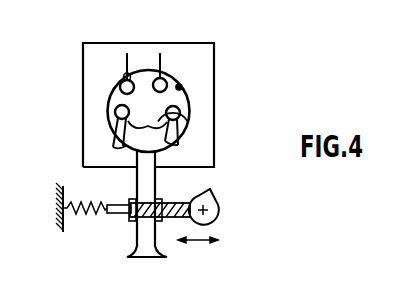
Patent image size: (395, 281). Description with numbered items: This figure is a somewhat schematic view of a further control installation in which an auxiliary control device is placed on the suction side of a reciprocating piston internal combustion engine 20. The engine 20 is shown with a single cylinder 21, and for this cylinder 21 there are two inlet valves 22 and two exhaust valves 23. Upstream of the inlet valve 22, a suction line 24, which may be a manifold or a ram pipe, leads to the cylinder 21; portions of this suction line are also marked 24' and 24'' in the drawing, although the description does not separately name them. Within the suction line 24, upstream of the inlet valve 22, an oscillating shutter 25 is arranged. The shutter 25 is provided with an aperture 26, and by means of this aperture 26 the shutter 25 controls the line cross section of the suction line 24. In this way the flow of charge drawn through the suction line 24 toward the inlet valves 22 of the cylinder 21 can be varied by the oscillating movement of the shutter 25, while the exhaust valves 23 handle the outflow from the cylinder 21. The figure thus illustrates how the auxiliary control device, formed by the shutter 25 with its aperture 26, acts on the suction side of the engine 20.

The reciprocating piston internal combustion engine 20 is at (83, 63).
The cylinder 21 is at (182, 87).
The inlet valve 22 is at (114, 147).
The exhaust valve 23 is at (131, 63).
The suction line 24 is at (131, 211).
The left contact 24' is at (98, 124).
The right contact 24'' is at (214, 113).
The oscillating shutter 25 is at (186, 203).
The aperture 26 is at (112, 218).